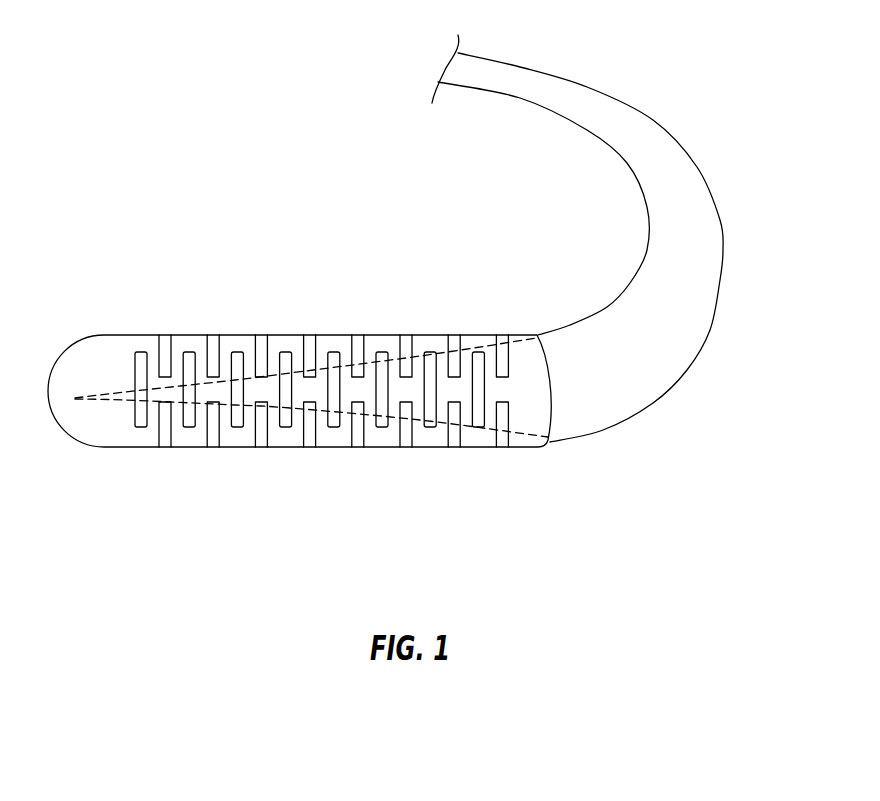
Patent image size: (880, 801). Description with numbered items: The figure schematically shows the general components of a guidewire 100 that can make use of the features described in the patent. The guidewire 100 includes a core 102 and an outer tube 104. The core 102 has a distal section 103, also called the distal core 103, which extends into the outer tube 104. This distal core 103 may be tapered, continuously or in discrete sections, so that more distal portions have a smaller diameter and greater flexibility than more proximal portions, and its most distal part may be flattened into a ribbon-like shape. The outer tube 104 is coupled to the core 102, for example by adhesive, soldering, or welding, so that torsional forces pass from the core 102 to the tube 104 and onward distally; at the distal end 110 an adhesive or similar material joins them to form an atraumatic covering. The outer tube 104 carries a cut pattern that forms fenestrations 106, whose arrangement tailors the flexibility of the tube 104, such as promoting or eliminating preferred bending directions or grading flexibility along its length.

The guidewire 100 is at (384, 241).
The core 102 is at (680, 184).
The distal section 103 is at (245, 397).
The outer tube 104 is at (297, 352).
The fenestrations 106 is at (380, 362).
The distal end 110 is at (48, 360).